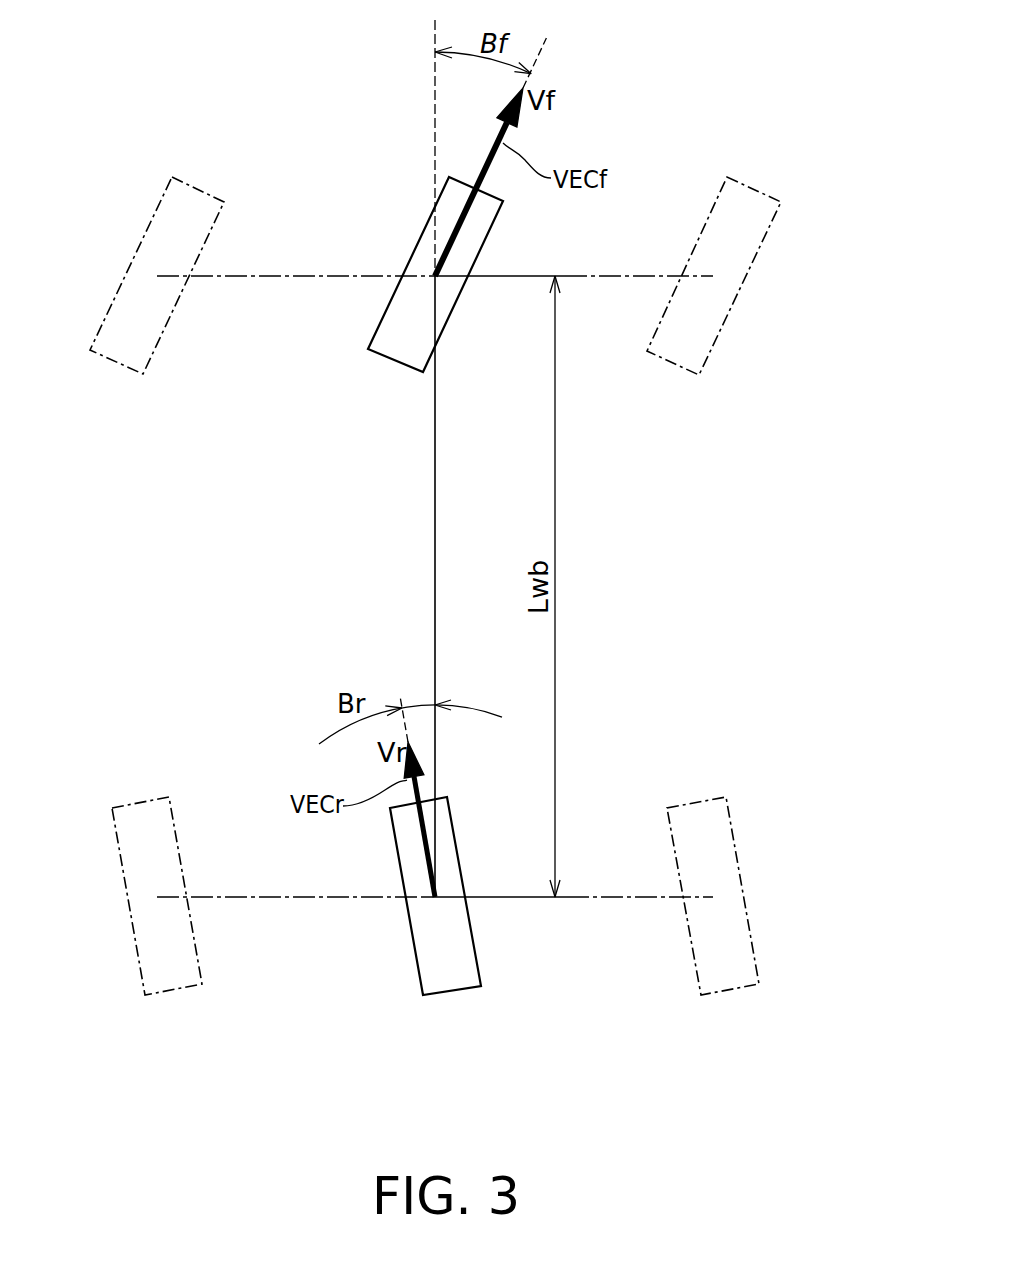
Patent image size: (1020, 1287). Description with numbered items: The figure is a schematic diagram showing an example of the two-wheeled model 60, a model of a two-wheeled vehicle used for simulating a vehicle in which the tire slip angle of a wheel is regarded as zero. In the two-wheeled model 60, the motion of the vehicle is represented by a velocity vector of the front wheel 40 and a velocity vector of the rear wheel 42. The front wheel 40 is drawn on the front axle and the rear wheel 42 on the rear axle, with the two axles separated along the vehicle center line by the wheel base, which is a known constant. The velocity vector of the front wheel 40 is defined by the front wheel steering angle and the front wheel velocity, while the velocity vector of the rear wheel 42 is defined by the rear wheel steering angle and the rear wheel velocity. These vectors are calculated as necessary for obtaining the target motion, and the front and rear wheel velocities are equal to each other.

The two-wheeled model 60 is at (402, 172).
The front wheel 40 is at (379, 327).
The rear wheel 42 is at (443, 995).